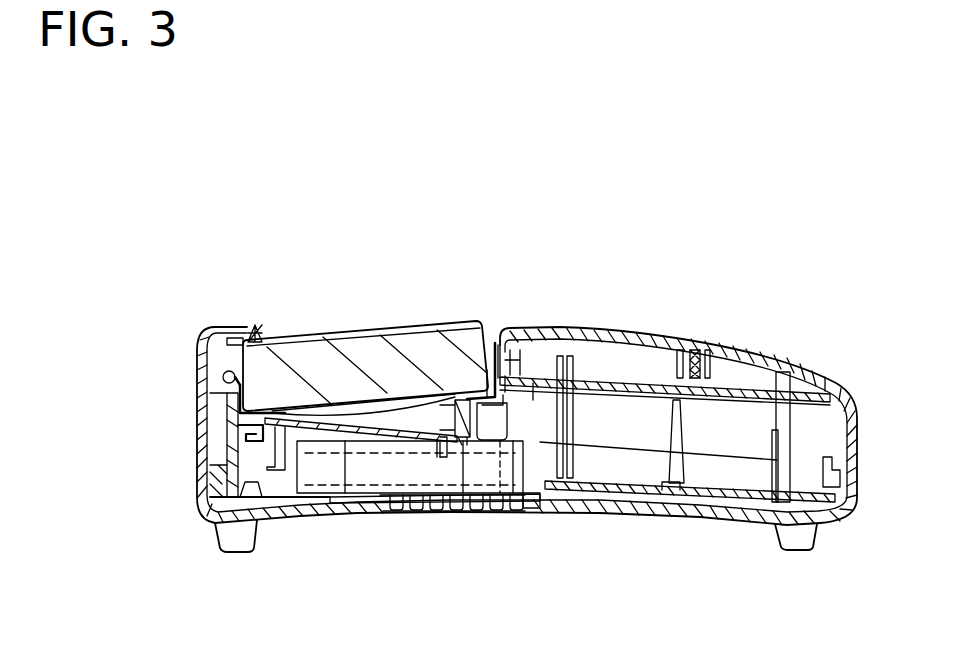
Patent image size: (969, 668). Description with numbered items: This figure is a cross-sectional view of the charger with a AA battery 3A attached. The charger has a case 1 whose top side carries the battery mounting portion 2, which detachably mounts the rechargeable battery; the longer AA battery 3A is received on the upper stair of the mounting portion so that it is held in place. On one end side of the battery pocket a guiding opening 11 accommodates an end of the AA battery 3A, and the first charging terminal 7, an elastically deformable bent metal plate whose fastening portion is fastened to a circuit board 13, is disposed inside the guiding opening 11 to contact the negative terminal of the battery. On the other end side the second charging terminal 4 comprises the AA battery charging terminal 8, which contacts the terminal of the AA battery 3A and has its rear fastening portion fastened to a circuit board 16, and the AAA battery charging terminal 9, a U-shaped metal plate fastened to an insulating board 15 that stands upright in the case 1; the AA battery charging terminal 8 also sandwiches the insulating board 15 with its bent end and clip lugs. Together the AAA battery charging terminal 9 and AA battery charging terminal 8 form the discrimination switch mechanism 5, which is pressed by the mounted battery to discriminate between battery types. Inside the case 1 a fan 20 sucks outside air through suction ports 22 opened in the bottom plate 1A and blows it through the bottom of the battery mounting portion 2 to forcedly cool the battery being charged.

The case 1 is at (655, 345).
The bottom plate 1A is at (383, 510).
The battery mounting portion 2 is at (347, 497).
The AA battery 3A is at (362, 372).
The second charging terminal 4 is at (451, 316).
The discrimination switch mechanism 5 is at (512, 431).
The first charging terminal 7 is at (215, 345).
The AA battery charging terminal 8 is at (492, 350).
The AAA battery charging terminal 9 is at (423, 395).
The guiding opening 11 is at (252, 333).
The circuit board 13 is at (234, 455).
The insulating board 15 is at (487, 509).
The circuit board 16 is at (618, 378).
The fan 20 is at (307, 518).
The suction ports 22 is at (430, 520).